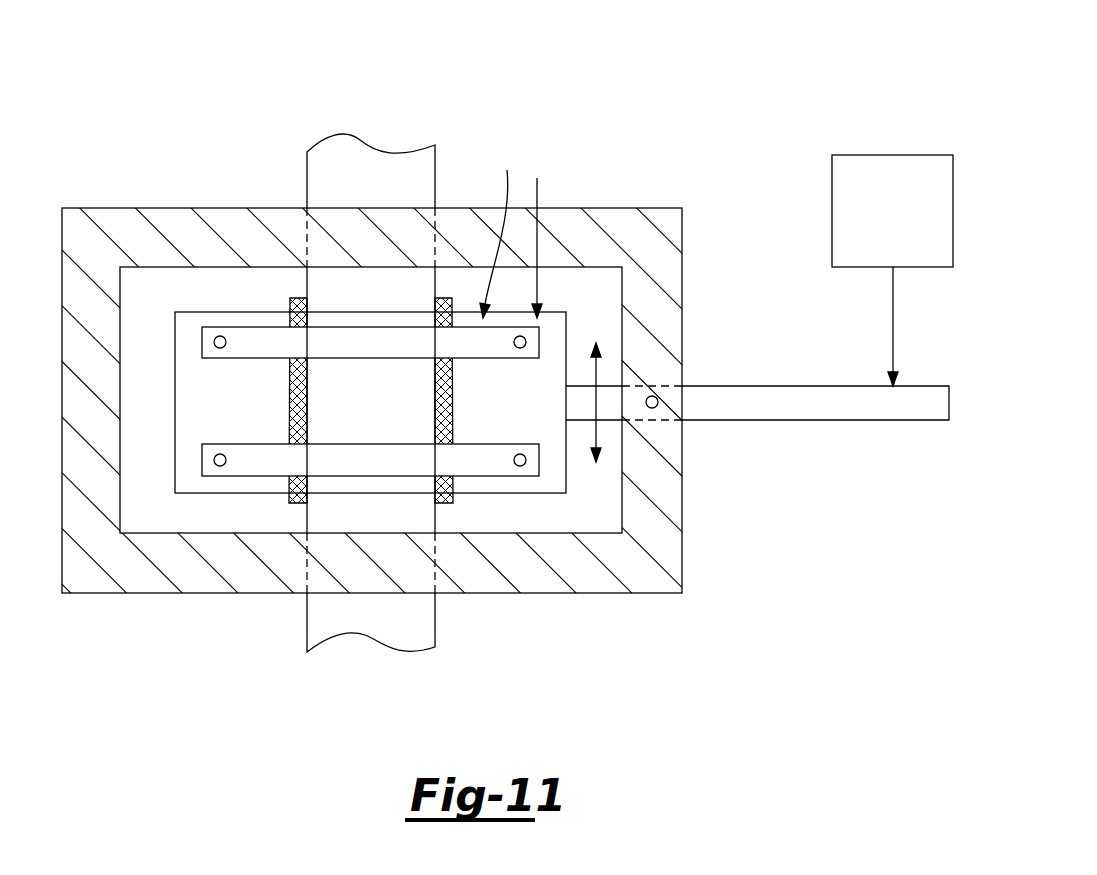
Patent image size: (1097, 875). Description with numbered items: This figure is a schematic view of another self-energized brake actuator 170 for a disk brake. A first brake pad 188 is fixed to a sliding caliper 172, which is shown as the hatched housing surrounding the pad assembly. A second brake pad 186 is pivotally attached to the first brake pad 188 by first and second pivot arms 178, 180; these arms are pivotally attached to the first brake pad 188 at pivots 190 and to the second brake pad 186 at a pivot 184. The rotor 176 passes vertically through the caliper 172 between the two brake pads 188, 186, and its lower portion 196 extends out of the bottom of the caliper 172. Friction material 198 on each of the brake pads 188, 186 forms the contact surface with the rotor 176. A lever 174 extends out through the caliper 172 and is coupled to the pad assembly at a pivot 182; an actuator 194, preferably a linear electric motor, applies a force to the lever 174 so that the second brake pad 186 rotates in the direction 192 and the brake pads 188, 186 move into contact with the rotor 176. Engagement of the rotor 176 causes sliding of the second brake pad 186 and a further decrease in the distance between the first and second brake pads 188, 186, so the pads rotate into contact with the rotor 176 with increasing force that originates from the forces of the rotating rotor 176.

The self-energized brake actuator 170 is at (548, 437).
The sliding caliper 172 is at (640, 240).
The lever 174 is at (785, 408).
The rotor 176 is at (350, 155).
The first pivot arm 178 is at (258, 455).
The second pivot arm 180 is at (240, 335).
The pivot pin 182 is at (655, 409).
The pivot 184 is at (518, 453).
The second brake pad 186 is at (511, 228).
The first brake pad 188 is at (185, 320).
The pivots 190 is at (217, 453).
The direction of rotation 192 is at (597, 406).
The actuator 194 is at (872, 225).
The lower tube 196 is at (365, 615).
The friction material 198 is at (435, 310).